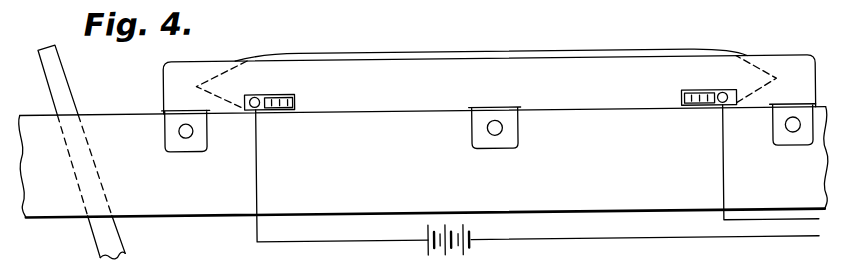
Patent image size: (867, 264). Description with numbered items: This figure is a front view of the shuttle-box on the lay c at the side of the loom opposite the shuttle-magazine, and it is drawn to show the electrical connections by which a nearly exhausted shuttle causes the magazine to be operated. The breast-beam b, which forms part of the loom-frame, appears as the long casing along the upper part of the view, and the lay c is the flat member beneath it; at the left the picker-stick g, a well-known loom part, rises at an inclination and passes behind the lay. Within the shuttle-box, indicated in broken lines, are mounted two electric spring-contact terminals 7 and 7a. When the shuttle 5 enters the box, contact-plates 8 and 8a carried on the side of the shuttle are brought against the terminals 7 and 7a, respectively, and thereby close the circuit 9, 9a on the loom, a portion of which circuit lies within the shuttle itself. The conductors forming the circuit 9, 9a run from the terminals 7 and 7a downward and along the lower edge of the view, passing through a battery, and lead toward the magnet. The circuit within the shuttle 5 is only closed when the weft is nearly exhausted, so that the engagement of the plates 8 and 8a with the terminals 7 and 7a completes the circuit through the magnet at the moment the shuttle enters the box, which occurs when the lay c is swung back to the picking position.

The shuttle 5 is at (528, 52).
The electric spring-contact terminal 7 is at (270, 108).
The electric spring-contact terminal 7a is at (713, 109).
The contact-plate 8 is at (280, 93).
The contact-plate 8a is at (697, 93).
The circuit 9 is at (322, 240).
The circuit 9a is at (734, 196).
The breast-beam b is at (488, 103).
The lay c is at (423, 162).
The picker-stick g is at (69, 81).